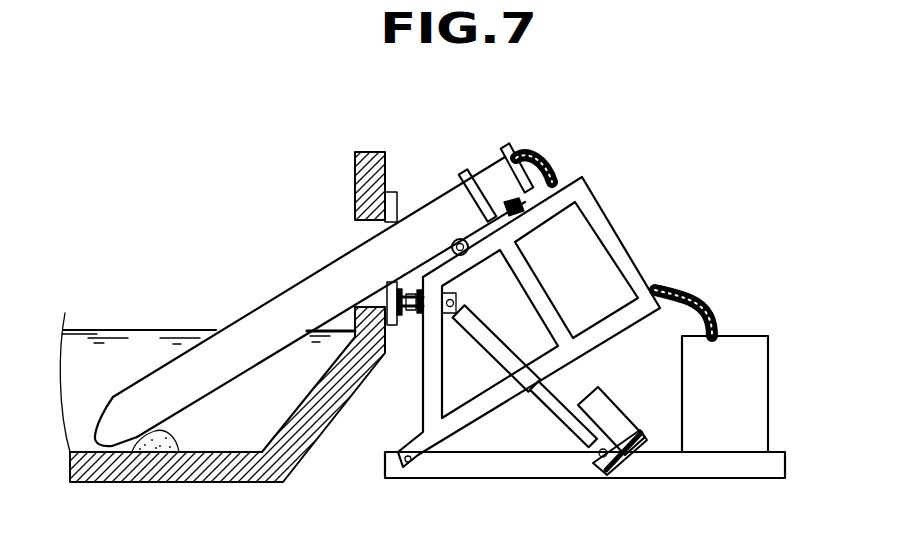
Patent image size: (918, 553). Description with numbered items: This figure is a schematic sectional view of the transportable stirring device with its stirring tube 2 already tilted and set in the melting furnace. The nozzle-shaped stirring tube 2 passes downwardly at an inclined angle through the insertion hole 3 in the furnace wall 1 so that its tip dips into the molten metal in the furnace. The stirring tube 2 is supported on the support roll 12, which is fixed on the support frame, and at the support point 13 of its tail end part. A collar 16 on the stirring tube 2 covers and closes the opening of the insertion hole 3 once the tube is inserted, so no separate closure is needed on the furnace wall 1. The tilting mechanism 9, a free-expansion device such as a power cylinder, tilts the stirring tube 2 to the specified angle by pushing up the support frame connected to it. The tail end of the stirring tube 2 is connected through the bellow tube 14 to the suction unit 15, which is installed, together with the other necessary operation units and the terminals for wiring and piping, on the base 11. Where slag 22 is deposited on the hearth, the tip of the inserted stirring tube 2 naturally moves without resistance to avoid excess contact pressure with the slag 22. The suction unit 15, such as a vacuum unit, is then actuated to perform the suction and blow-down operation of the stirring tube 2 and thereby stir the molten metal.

The furnace wall 1 is at (310, 443).
The stirring tube 2 is at (262, 304).
The insertion hole 3 is at (360, 231).
The tilting mechanism 9 is at (556, 415).
The base 11 is at (697, 470).
The support roll 12 is at (455, 238).
The support point 13 is at (513, 200).
The bellow tube 14 is at (560, 176).
The suction unit 15 is at (736, 348).
The collar 16 is at (389, 326).
The slag 22 is at (163, 454).